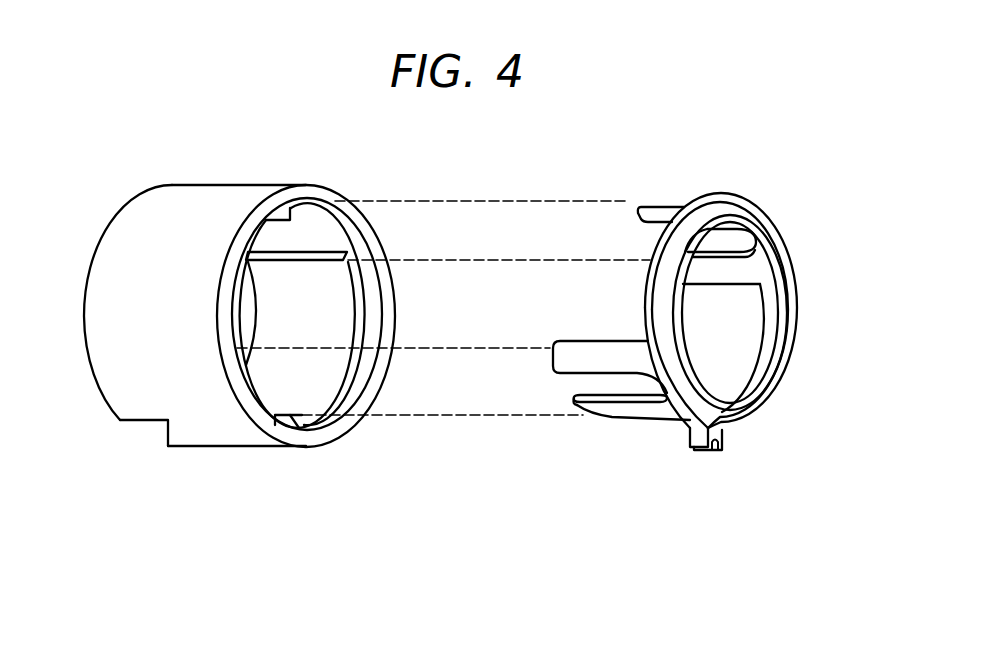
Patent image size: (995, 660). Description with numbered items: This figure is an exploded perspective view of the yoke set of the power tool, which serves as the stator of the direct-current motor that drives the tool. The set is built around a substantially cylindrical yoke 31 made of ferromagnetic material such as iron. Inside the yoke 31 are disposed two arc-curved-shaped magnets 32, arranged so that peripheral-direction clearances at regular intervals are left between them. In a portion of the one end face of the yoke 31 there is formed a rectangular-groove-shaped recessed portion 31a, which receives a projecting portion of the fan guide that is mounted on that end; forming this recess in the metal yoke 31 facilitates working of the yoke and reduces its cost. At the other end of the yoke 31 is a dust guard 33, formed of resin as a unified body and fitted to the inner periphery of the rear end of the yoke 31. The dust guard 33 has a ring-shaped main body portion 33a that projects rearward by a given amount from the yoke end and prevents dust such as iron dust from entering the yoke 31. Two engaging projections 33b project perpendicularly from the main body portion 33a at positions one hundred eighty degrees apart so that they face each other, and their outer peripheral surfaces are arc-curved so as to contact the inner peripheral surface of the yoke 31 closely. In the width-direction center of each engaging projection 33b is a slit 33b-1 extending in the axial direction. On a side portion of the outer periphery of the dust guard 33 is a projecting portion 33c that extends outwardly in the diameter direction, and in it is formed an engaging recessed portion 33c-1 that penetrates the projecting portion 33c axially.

The yoke 31 is at (217, 198).
The recessed portion 31a is at (158, 430).
The magnet 32 is at (337, 213).
The dust guard 33 is at (796, 282).
The main body portion 33a is at (740, 198).
The engaging projection 33b is at (657, 206).
The slit 33b-1 is at (716, 243).
The projecting portion 33c is at (723, 430).
The engaging recessed portion 33c-1 is at (714, 455).